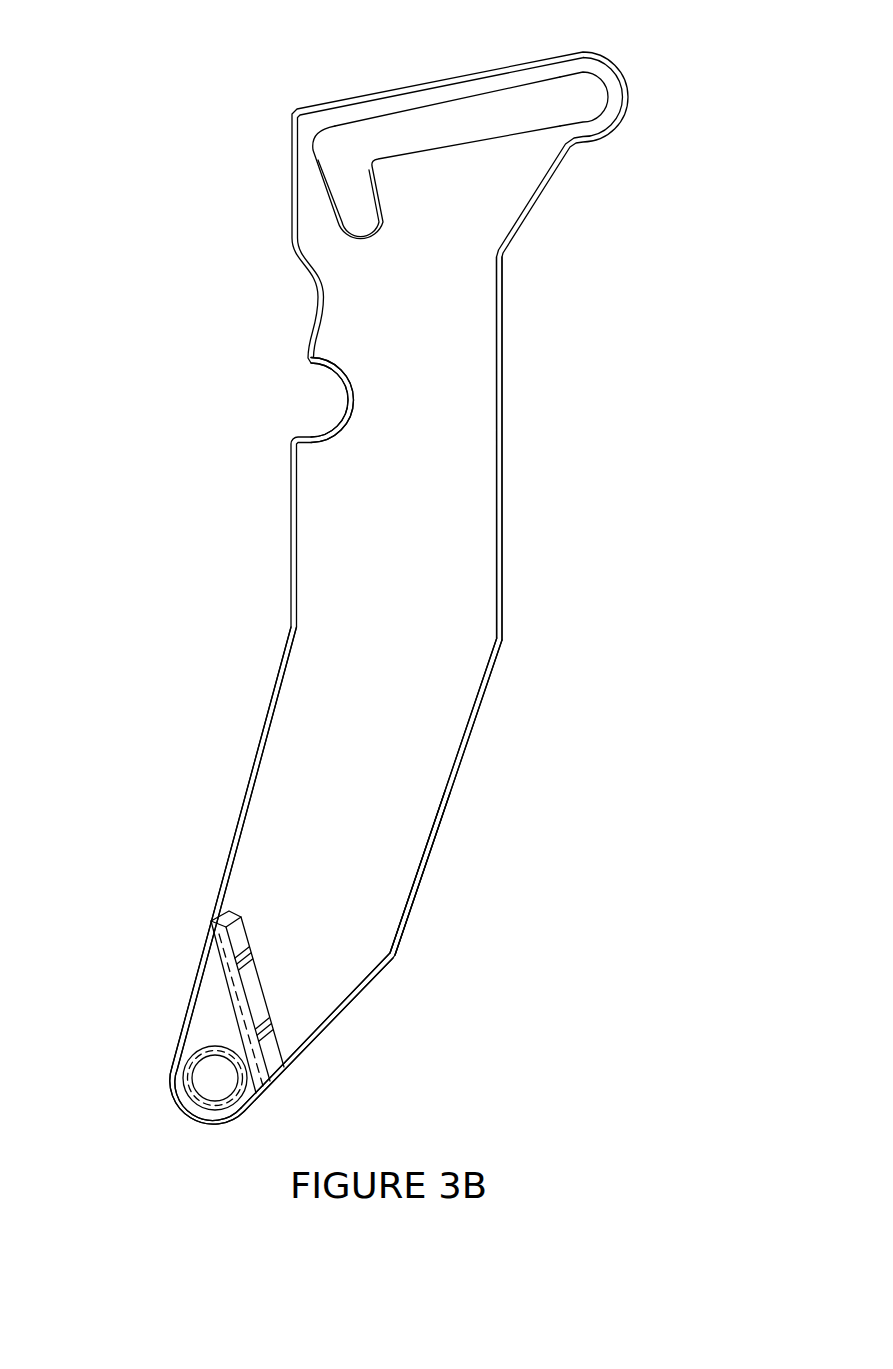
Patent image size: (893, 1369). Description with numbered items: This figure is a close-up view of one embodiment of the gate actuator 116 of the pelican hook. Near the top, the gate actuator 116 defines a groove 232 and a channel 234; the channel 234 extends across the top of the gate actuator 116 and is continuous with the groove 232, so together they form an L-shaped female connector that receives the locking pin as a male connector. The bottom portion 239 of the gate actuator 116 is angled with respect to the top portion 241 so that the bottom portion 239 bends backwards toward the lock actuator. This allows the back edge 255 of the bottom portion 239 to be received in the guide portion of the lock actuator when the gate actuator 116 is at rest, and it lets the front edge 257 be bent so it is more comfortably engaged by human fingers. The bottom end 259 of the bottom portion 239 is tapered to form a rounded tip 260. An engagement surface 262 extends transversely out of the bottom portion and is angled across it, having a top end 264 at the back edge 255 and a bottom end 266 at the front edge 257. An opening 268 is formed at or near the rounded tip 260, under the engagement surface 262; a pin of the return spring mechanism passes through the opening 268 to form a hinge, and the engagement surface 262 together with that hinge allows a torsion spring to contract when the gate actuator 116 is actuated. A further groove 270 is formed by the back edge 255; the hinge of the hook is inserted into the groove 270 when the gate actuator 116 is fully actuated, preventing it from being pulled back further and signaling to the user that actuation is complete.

The gate actuator 116 is at (136, 123).
The groove 232 is at (355, 207).
The channel 234 is at (578, 92).
The groove 270 is at (337, 380).
The top portion 241 is at (458, 438).
The front edge 257 is at (503, 636).
The bottom portion 239 is at (399, 815).
The back edge 255 is at (229, 840).
The bottom end 259 is at (363, 988).
The rounded tip 260 is at (190, 1118).
The opening 268 is at (192, 1062).
The top end 264 is at (213, 925).
The engagement surface 262 is at (248, 972).
The bottom end 266 is at (277, 1073).